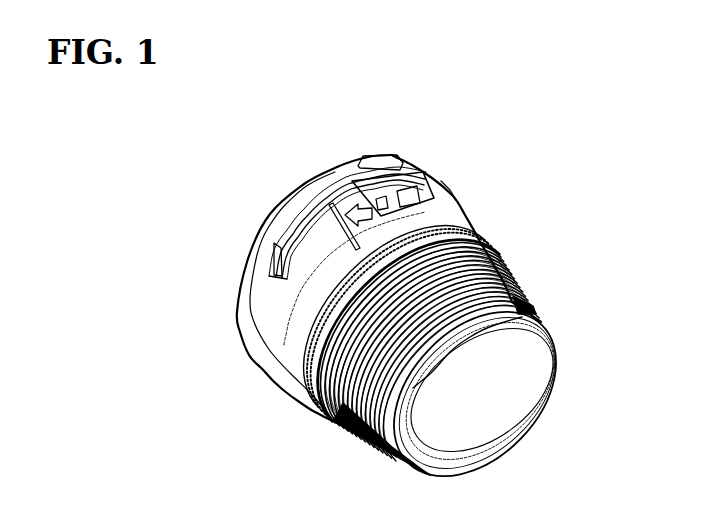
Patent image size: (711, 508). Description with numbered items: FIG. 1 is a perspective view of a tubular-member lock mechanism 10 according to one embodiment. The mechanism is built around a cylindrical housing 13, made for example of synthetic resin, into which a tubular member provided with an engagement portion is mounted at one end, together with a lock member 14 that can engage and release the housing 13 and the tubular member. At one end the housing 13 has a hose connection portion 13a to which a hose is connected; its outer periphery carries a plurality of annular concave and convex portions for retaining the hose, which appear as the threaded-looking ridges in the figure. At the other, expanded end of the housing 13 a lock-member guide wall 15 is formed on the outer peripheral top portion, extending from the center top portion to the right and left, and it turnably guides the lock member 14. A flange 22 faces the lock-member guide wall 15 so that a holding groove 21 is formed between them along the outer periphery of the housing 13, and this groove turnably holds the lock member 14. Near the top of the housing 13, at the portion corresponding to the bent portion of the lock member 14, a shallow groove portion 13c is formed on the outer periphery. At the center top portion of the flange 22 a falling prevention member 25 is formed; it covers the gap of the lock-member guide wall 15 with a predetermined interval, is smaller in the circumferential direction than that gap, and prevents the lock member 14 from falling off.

The tubular-member lock mechanism 10 is at (279, 78).
The housing 13 is at (323, 437).
The hose connection portion 13a is at (527, 310).
The shallow groove portion 13c is at (468, 206).
The lock member 14 is at (420, 172).
The lock-member guide wall 15 is at (287, 214).
The holding groove 21 is at (276, 254).
The flange 22 is at (252, 307).
The falling prevention member 25 is at (373, 160).